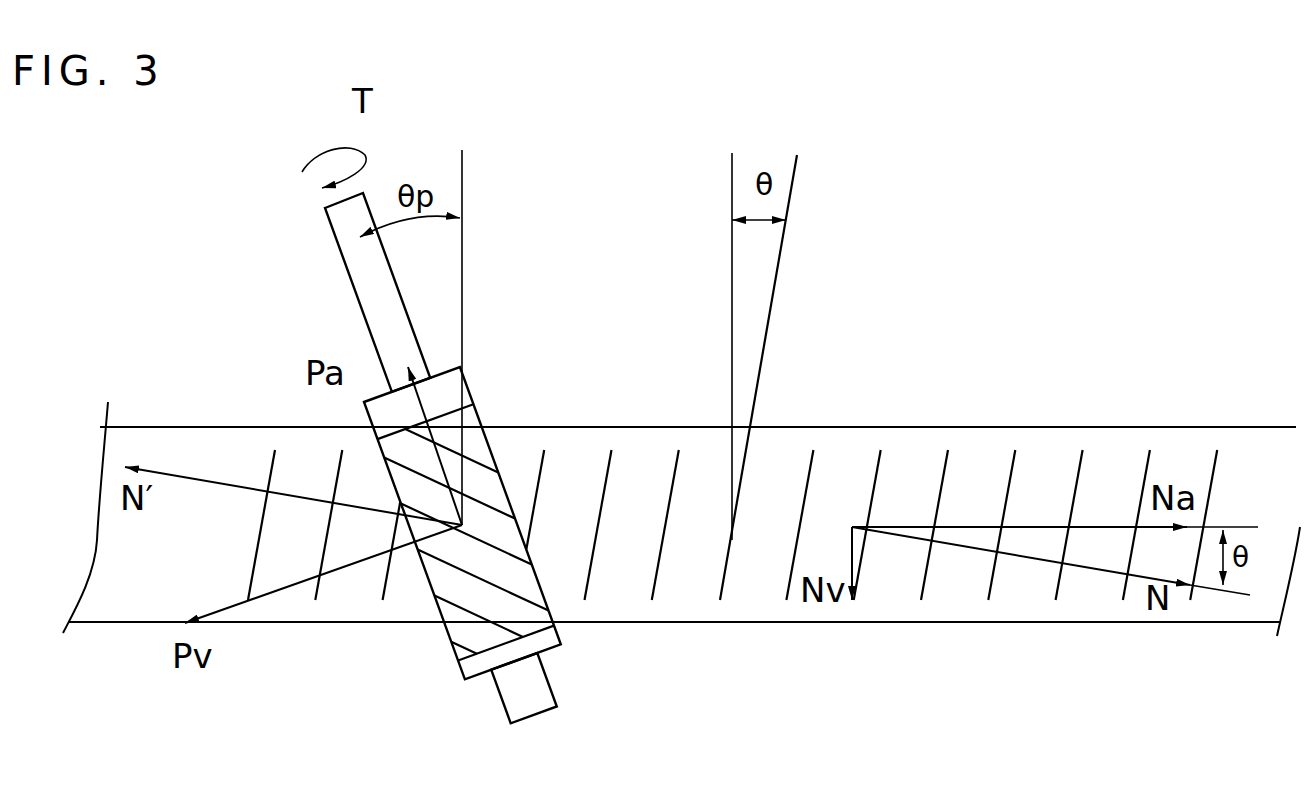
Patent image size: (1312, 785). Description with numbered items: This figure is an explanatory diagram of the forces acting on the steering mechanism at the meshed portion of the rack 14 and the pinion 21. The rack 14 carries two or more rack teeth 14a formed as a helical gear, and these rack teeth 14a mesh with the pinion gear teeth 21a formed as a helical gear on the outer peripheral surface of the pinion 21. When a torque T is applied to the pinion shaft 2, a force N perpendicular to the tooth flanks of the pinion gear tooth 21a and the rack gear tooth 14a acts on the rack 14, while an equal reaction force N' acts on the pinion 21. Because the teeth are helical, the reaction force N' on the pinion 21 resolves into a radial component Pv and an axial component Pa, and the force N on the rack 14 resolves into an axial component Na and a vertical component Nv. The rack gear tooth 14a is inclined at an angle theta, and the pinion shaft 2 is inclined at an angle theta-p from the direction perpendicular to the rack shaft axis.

The pinion shaft 2 is at (350, 294).
The rack 14 is at (1225, 426).
The rack teeth 14a is at (1078, 485).
The pinion 21 is at (455, 652).
The pinion gear teeth 21a is at (440, 563).